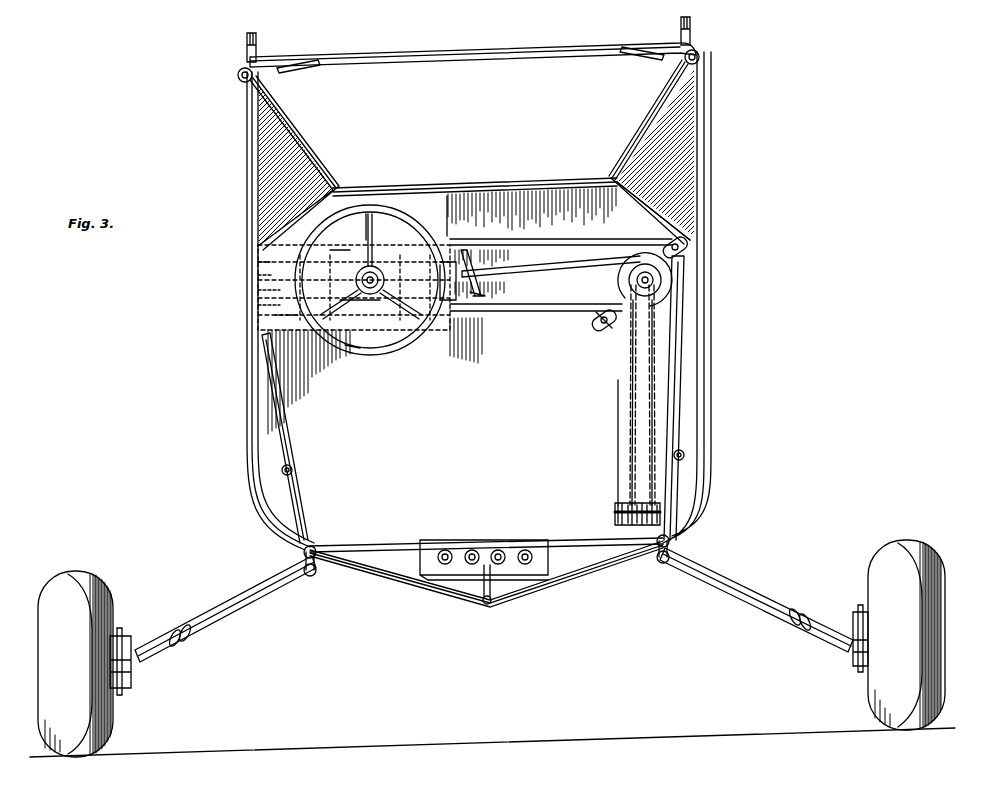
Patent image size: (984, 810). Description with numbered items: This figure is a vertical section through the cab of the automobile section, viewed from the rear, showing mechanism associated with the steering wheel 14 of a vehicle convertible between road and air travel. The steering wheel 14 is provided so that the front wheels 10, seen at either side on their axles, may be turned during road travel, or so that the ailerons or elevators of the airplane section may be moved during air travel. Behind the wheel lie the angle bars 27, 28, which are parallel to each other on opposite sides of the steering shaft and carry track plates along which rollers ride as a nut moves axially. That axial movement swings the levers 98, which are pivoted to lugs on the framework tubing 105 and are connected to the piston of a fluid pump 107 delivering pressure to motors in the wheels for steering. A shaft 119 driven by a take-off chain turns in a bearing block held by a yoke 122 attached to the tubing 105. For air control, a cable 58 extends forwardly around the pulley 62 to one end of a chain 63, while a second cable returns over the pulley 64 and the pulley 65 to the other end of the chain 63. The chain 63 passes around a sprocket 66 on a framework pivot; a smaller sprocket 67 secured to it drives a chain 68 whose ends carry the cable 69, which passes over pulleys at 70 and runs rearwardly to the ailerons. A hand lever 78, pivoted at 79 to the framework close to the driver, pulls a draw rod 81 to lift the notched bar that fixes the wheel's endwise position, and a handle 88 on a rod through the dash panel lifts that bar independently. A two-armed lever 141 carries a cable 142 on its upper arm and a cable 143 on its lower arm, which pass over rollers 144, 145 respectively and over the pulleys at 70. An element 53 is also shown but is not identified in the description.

The front wheels 10 is at (105, 588).
The steering wheel 14 is at (364, 348).
The angle bar 27 is at (360, 309).
The angle bar 28 is at (440, 320).
The connecting rod 53 is at (530, 268).
The cable 58 is at (526, 312).
The pulley 62 is at (380, 348).
The chain 63 is at (572, 240).
The pulley 64 is at (408, 340).
The pulley 65 is at (424, 334).
The sprocket 66 is at (622, 272).
The smaller sprocket 67 is at (632, 286).
The chain 68 is at (628, 330).
The cable 69 is at (628, 380).
The pulleys 70 is at (608, 500).
The hand lever 78 is at (484, 250).
The pivot 79 is at (486, 298).
The draw rod 81 is at (450, 250).
The handle 88 is at (390, 262).
The levers 98 is at (248, 260).
The framework tubing 105 is at (250, 276).
The fluid pump 107 is at (312, 320).
The shaft 119 is at (252, 305).
The yoke 122 is at (252, 290).
The two-armed lever 141 is at (340, 255).
The cable 142 is at (642, 232).
The cable 143 is at (570, 314).
The roller 144 is at (680, 230).
The roller 145 is at (592, 330).